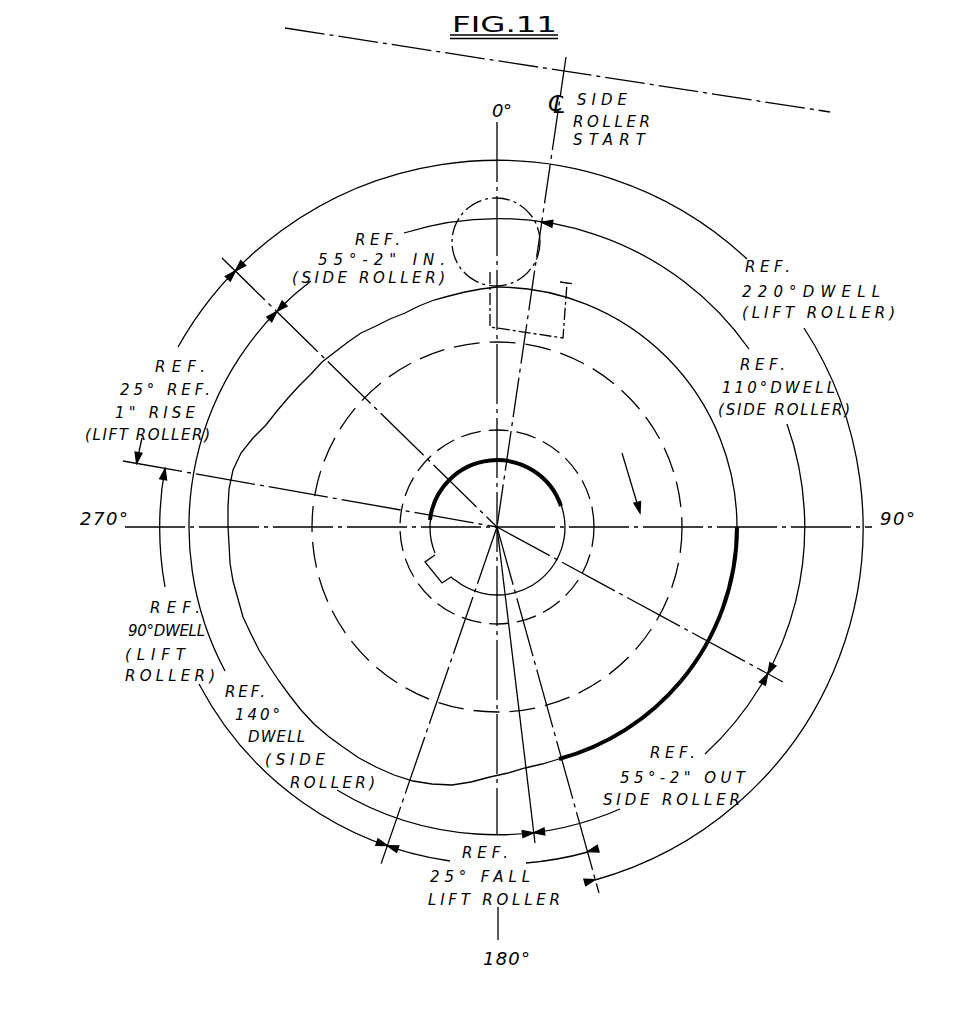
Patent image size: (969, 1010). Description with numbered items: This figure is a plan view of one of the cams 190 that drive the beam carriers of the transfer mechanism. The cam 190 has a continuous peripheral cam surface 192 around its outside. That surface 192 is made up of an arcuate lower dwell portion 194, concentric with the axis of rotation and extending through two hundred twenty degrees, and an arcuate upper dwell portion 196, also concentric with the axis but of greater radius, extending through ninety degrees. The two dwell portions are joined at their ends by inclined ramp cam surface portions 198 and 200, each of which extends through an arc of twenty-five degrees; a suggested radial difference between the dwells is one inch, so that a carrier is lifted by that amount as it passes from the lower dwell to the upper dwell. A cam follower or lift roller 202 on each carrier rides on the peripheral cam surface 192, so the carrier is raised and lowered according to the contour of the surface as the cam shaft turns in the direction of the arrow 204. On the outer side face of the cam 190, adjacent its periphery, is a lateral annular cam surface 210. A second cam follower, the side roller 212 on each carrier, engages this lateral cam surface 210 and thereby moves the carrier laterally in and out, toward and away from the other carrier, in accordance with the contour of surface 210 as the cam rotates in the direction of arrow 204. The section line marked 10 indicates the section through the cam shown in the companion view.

The section line 10- 10 is at (808, 143).
The cam 190 is at (708, 588).
The peripheral cam surface 192 is at (723, 620).
The lower dwell portion 194 is at (678, 368).
The upper dwell portion 196 is at (240, 630).
The ramp cam surface portion 198 is at (265, 425).
The ramp cam surface portion 200 is at (452, 788).
The lift roller 202 is at (467, 215).
The arrow 204 is at (632, 480).
The lateral annular cam surface 210 is at (720, 512).
The side roller 212 is at (568, 318).